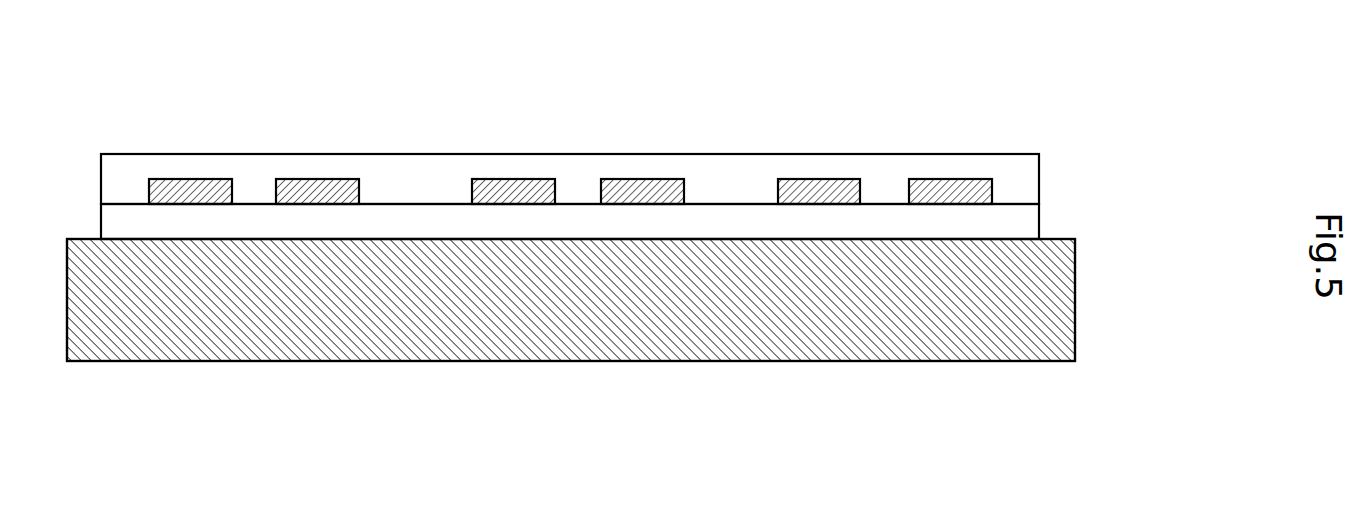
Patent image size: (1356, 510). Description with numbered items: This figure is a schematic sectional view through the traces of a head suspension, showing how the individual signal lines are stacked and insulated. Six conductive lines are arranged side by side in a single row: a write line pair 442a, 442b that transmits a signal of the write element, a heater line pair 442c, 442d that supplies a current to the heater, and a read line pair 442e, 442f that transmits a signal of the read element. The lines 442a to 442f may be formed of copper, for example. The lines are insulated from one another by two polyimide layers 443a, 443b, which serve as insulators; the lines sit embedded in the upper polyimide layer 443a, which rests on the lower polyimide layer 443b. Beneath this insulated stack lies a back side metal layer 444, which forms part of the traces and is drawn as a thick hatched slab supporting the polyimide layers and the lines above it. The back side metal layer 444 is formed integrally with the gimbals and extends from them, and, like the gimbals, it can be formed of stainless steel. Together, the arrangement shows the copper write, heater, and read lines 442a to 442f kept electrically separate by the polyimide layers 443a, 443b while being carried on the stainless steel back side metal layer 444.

The write line 442a is at (948, 179).
The write line 442b is at (815, 180).
The heater line 442c is at (640, 180).
The heater line 442d is at (508, 180).
The read line 442e is at (312, 180).
The read line 442f is at (185, 180).
The polyimide layer 443a is at (1040, 171).
The polyimide layer 443b is at (1042, 217).
The back side metal layer 444 is at (543, 361).